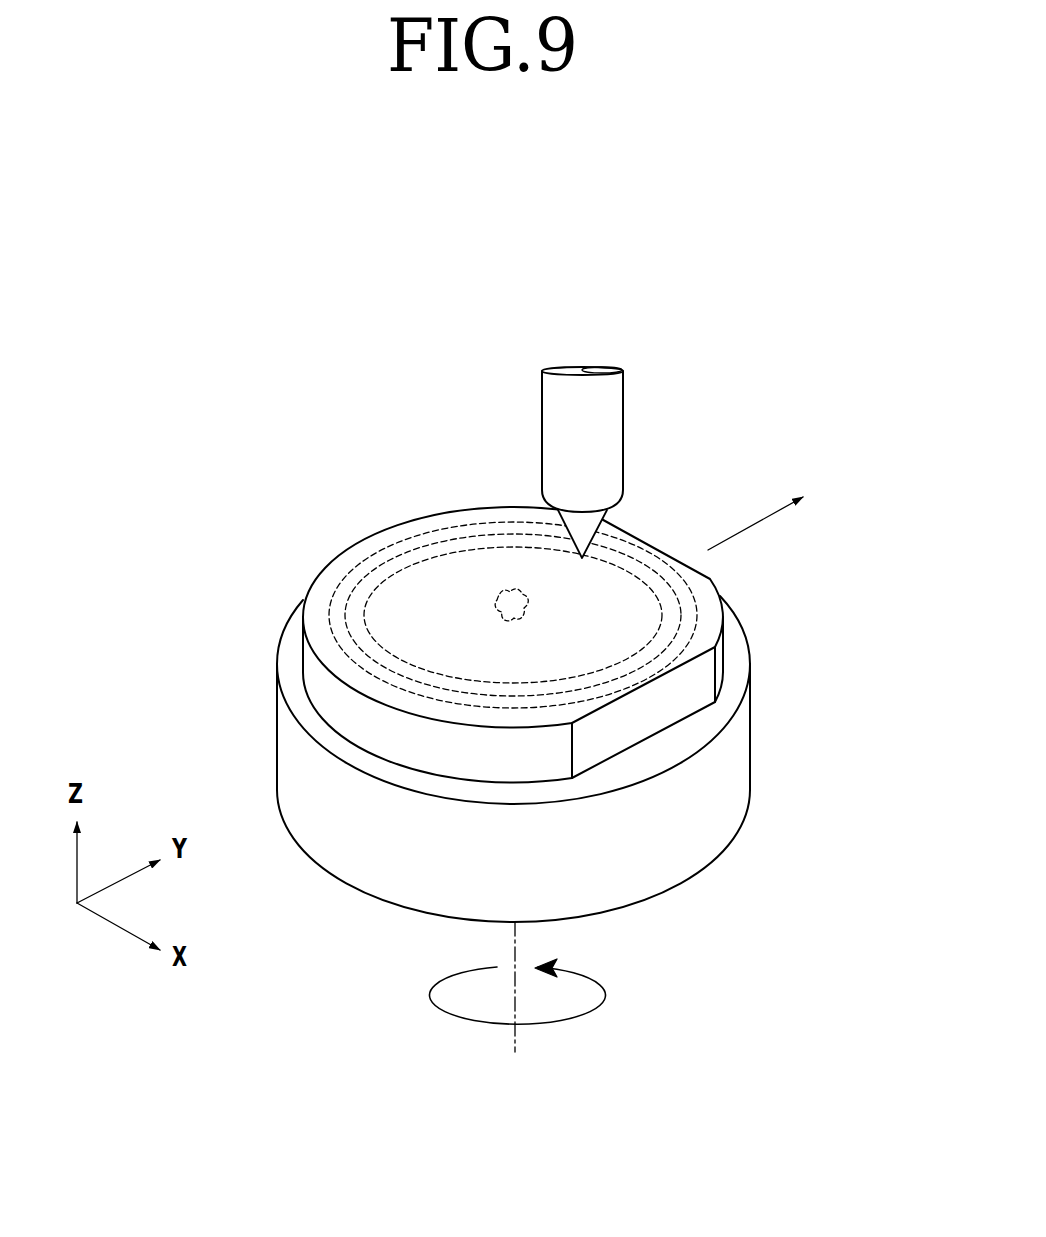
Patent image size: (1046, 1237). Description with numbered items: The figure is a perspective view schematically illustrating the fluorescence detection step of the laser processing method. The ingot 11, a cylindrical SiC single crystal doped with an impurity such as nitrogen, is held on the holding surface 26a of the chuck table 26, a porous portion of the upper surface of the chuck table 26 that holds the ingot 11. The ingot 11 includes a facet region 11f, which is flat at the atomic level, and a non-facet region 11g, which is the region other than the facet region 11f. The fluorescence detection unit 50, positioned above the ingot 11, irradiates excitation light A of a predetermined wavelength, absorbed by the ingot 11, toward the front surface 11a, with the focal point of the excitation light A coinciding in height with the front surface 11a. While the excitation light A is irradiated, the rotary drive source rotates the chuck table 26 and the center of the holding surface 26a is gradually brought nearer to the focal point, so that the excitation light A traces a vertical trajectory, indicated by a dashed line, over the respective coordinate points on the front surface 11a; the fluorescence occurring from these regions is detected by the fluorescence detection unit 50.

The ingot 11 is at (712, 671).
The front surface 11a is at (503, 556).
The facet region 11f is at (489, 593).
The non-facet region 11g is at (400, 594).
The chuck table 26 is at (728, 796).
The holding surface 26a is at (711, 727).
The fluorescence detection unit 50 is at (578, 383).
The excitation light A is at (597, 522).